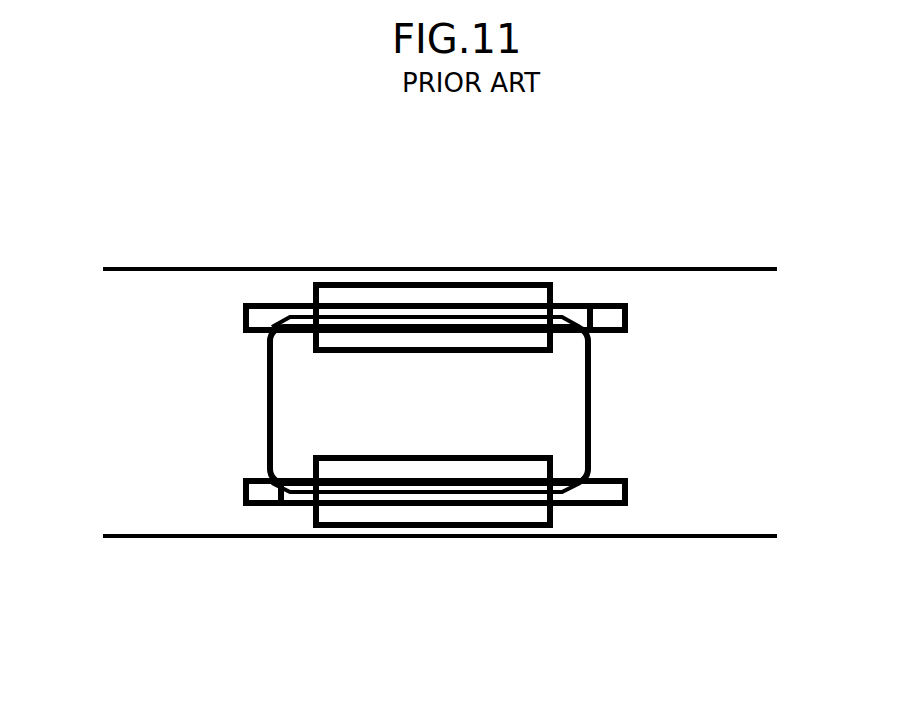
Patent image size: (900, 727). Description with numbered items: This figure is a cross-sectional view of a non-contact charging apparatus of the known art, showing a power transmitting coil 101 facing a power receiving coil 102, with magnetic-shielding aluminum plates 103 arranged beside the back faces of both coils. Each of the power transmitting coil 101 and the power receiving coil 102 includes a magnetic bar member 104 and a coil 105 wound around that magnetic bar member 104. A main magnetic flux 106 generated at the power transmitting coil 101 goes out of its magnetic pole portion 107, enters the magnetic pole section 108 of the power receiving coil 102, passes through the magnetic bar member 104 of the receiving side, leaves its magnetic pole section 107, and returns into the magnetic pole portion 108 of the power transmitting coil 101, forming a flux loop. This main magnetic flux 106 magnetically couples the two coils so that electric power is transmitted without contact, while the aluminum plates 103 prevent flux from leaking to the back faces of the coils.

The power transmitting coil 101 is at (222, 488).
The power receiving coil 102 is at (222, 322).
The magnetic-shielding aluminum plate 103 is at (718, 269).
The magnetic bar member 104 is at (458, 303).
The coil 105 is at (368, 282).
The main magnetic flux 106 is at (592, 400).
The magnetic pole portion 107 is at (605, 303).
The magnetic pole portion 108 is at (257, 303).